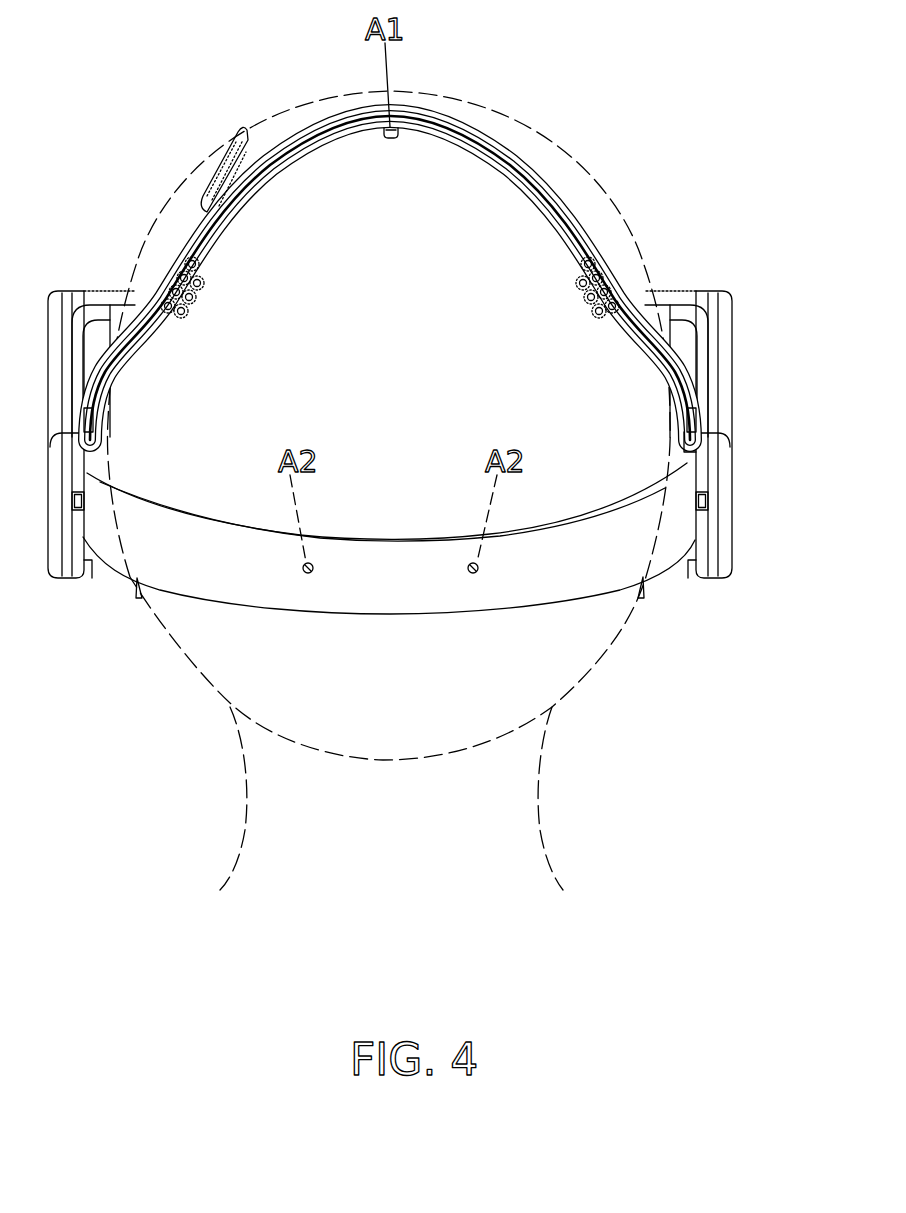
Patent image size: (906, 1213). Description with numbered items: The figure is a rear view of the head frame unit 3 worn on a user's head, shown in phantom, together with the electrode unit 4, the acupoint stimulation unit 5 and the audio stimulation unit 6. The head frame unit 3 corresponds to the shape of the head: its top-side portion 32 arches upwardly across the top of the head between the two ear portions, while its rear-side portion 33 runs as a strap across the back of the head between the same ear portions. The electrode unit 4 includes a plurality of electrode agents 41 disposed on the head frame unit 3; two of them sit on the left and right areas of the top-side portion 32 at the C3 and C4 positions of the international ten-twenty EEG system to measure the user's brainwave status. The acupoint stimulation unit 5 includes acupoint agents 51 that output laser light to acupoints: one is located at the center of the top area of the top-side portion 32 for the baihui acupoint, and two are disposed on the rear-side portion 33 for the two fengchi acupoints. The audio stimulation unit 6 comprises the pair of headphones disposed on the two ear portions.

The head frame unit 3 is at (392, 596).
The top-side portion 32 is at (474, 128).
The rear-side portion 33 is at (605, 567).
The electrode unit 4 is at (206, 171).
The electrode agent 41 is at (220, 150).
The acupoint stimulation unit 5 is at (400, 144).
The acupoint agent 51 is at (387, 139).
The audio stimulation unit 6 is at (684, 450).